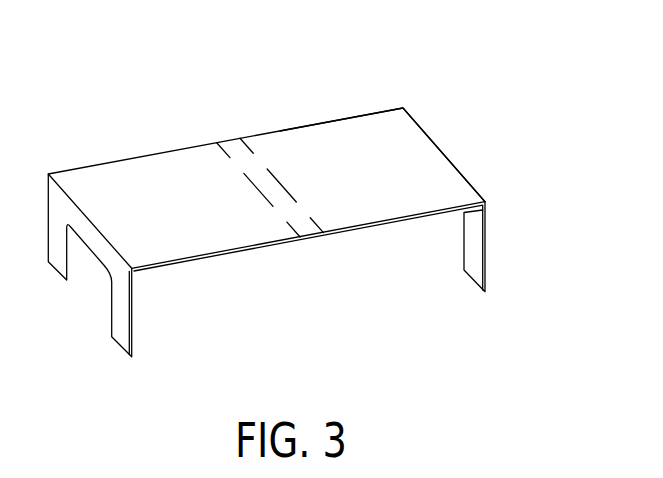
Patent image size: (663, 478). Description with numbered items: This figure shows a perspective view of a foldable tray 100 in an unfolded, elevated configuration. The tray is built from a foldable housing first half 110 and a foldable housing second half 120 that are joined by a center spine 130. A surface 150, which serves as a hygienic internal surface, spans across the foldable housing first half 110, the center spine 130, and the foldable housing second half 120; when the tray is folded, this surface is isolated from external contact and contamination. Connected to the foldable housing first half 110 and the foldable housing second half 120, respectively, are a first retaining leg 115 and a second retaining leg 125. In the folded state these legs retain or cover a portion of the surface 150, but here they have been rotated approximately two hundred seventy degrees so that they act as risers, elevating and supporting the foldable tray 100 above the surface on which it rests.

The foldable tray 100 is at (57, 60).
The foldable housing first half 110 is at (125, 163).
The foldable housing second half 120 is at (379, 122).
The first retaining leg 115 is at (137, 335).
The second retaining leg 125 is at (487, 263).
The center spine 130 is at (313, 240).
The surface 150 is at (227, 242).